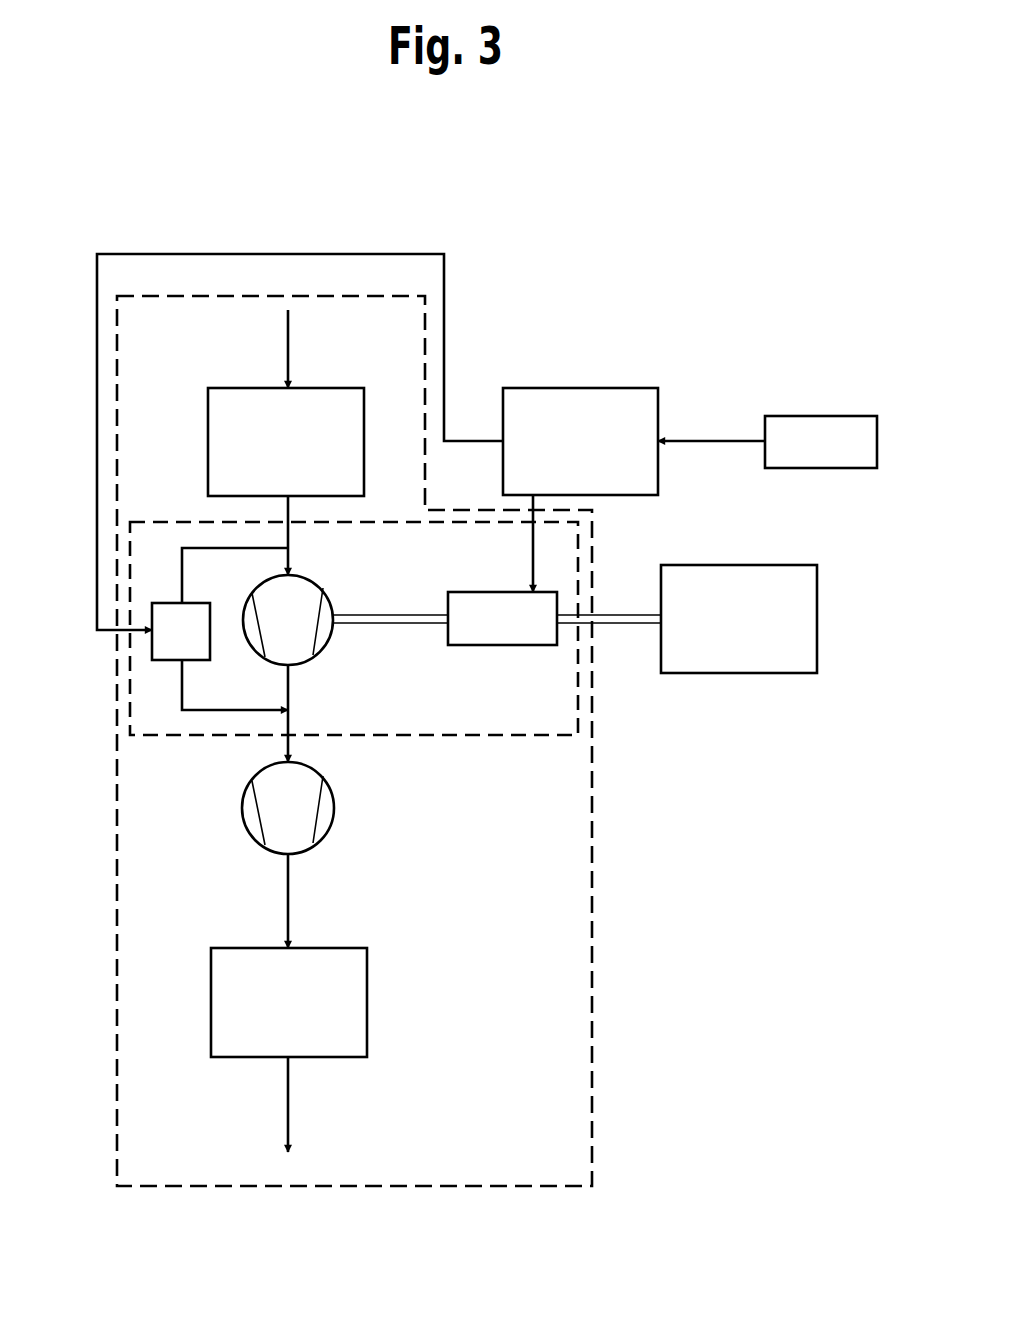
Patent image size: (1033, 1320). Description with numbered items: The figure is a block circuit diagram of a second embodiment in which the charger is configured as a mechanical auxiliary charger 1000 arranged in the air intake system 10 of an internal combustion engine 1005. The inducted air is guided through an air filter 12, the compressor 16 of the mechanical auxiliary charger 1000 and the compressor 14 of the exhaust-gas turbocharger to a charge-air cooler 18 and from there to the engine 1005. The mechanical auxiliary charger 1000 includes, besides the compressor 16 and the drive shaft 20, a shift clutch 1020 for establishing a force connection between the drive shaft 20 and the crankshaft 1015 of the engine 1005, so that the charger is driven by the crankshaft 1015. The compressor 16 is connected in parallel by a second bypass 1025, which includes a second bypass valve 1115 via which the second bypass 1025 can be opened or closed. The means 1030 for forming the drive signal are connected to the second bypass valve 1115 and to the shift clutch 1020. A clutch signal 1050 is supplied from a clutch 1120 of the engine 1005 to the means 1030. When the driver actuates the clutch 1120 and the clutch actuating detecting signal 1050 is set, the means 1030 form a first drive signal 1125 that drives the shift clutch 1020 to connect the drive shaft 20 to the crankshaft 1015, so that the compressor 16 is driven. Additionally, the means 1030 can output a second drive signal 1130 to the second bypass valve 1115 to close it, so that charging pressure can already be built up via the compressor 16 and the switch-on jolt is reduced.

The air intake system 10 is at (362, 310).
The air filter 12 is at (208, 437).
The compressor of the exhaust-gas turbocharger 14 is at (328, 831).
The compressor 16 is at (323, 587).
The charge-air cooler 18 is at (367, 997).
The drive shaft 20 is at (383, 628).
The mechanical auxiliary charger 1000 is at (503, 735).
The internal combustion engine 1005 is at (760, 673).
The crankshaft 1015 is at (622, 624).
The shift clutch 1020 is at (502, 637).
The second bypass 1025 is at (182, 697).
The means for forming the drive signal 1030 is at (610, 393).
The clutch signal 1050 is at (733, 440).
The second bypass valve 1115 is at (157, 650).
The clutch 1120 is at (847, 425).
The first drive signal 1125 is at (535, 558).
The second drive signal 1130 is at (473, 441).